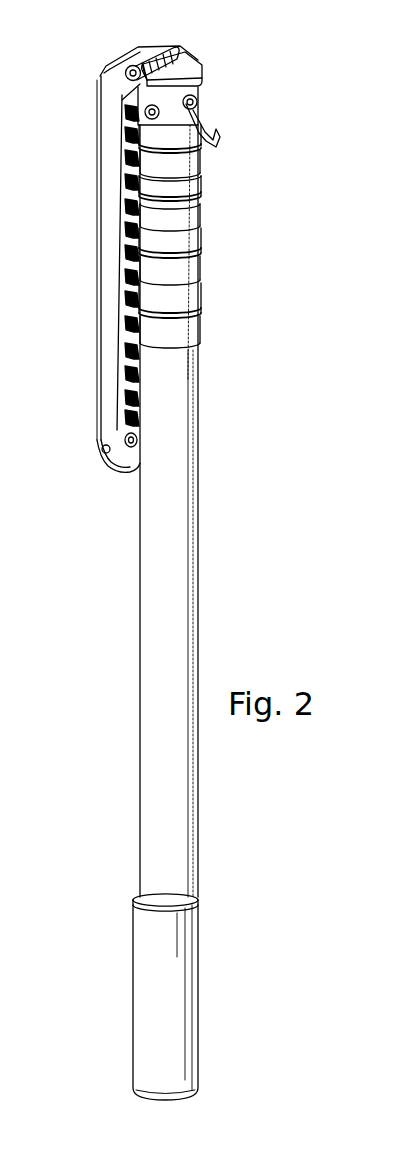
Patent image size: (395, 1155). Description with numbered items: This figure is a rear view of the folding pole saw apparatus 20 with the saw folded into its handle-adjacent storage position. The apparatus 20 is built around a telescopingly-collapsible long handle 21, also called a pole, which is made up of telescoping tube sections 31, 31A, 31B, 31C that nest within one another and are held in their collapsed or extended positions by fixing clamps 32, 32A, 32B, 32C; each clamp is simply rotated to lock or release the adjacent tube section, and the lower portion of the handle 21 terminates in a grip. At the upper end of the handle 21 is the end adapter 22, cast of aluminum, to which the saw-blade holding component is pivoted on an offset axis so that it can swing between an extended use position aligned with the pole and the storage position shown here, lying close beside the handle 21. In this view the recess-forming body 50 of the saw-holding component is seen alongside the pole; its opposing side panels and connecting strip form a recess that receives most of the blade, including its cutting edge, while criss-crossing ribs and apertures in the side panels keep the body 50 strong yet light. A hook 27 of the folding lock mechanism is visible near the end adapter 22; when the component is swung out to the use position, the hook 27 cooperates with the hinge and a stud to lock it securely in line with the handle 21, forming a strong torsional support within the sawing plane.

The pole saw apparatus 20 is at (316, 122).
The long handle 21 is at (178, 483).
The end adapter 22 is at (197, 62).
The hook 27 is at (204, 117).
The tube section 31 is at (203, 156).
The fixing clamp 32 is at (203, 178).
The tube section 31A is at (203, 201).
The fixing clamp 32A is at (203, 221).
The tube section 31B is at (203, 257).
The fixing clamp 32B is at (203, 278).
The tube section 31C is at (203, 316).
The fixing clamp 32C is at (203, 338).
The recess-forming body 50 is at (100, 238).